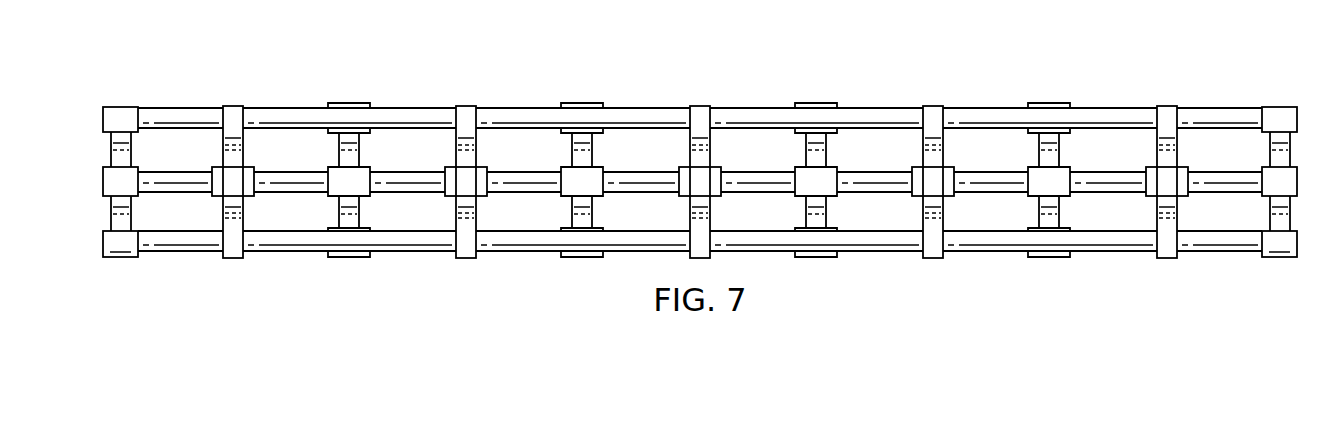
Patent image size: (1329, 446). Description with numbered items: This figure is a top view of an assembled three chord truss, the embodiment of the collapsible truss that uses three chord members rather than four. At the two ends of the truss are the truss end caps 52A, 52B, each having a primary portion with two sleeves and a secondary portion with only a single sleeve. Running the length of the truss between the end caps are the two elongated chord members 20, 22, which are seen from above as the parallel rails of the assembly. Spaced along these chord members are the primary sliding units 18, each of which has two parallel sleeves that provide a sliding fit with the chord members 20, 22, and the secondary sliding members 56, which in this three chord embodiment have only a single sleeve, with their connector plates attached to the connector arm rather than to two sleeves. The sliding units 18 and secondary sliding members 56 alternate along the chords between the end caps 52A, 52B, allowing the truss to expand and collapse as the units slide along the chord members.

The primary sliding unit 18 is at (338, 208).
The elongated chord member 20 is at (859, 107).
The elongated chord member 22 is at (1117, 253).
The truss end cap 52A is at (1278, 105).
The truss end cap 52B is at (122, 104).
The secondary sliding member 56 is at (233, 104).